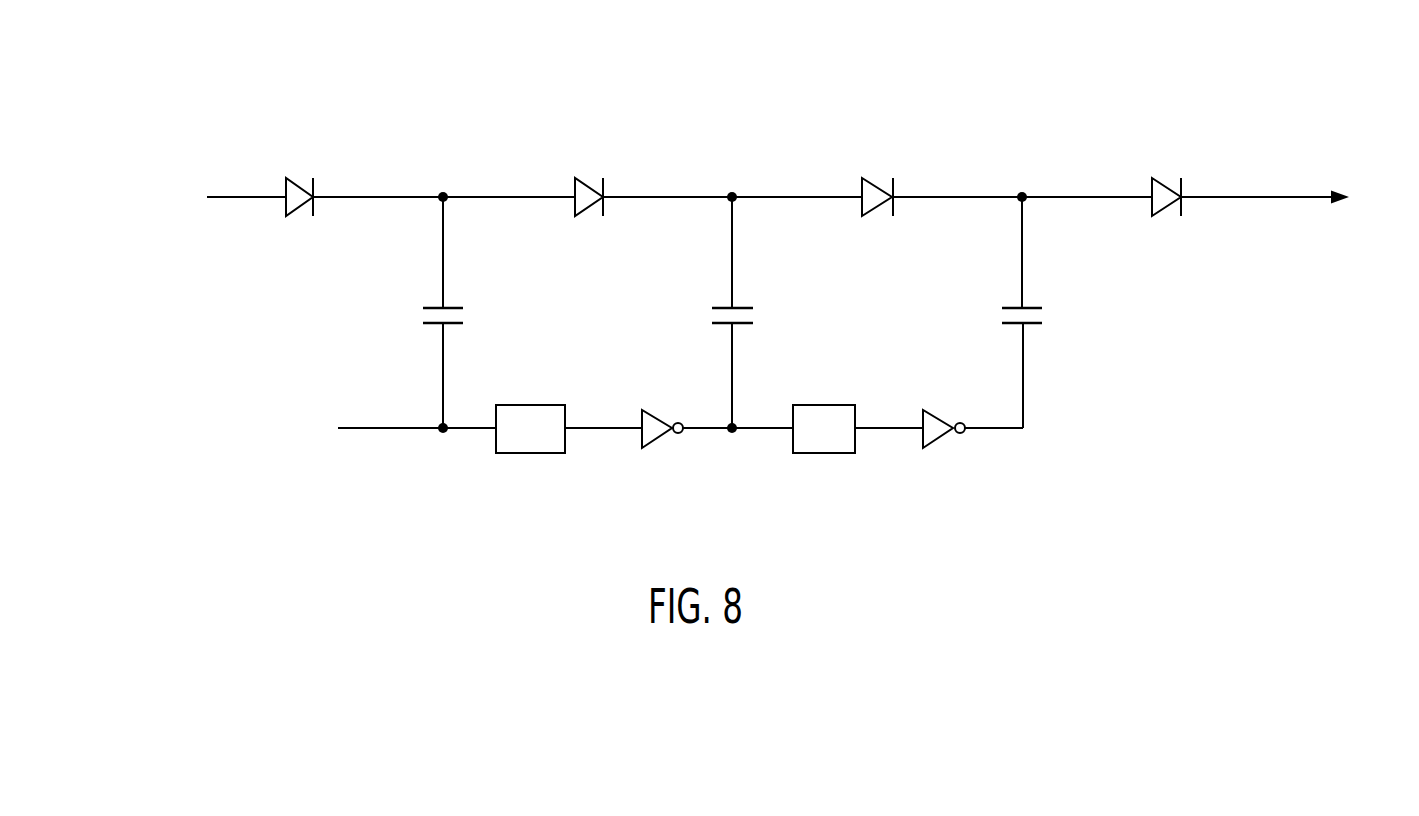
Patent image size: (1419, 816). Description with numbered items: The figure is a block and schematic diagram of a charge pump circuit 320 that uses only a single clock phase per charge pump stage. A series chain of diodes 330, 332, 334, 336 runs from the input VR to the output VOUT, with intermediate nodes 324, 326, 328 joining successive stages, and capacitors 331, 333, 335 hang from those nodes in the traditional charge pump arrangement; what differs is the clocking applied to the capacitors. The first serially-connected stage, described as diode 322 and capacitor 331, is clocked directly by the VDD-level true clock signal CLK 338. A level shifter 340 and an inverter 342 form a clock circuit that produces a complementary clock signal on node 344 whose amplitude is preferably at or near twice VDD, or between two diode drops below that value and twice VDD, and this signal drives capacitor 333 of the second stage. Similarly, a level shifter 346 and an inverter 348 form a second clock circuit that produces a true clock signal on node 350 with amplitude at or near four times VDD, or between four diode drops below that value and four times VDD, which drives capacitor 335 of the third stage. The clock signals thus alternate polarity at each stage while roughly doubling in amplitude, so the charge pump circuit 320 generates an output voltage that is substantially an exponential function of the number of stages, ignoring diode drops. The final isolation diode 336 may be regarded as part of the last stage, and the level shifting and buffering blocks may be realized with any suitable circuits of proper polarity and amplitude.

The charge pump circuit 320 is at (1024, 35).
The diode 322 is at (239, 196).
The first stage node 324 is at (488, 196).
The second stage node 326 is at (780, 196).
The third stage node 328 is at (1077, 196).
The diode 330 is at (304, 208).
The capacitor 331 is at (464, 314).
The diode 332 is at (594, 208).
The capacitor 333 is at (754, 314).
The diode 334 is at (876, 208).
The capacitor 335 is at (1043, 314).
The isolation diode 336 is at (1167, 208).
The clock input CLK 338 is at (377, 432).
The level shifter 340 is at (537, 454).
The inverter 342 is at (660, 440).
The node 344 is at (763, 432).
The level shifter 346 is at (818, 454).
The inverter 348 is at (943, 440).
The node 350 is at (1024, 388).